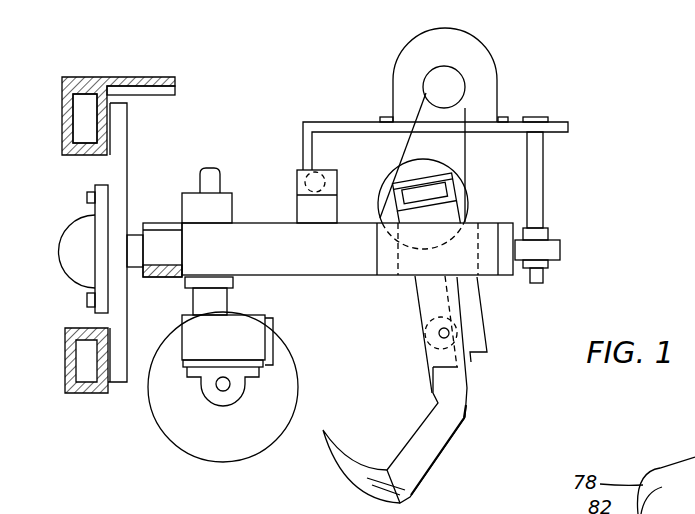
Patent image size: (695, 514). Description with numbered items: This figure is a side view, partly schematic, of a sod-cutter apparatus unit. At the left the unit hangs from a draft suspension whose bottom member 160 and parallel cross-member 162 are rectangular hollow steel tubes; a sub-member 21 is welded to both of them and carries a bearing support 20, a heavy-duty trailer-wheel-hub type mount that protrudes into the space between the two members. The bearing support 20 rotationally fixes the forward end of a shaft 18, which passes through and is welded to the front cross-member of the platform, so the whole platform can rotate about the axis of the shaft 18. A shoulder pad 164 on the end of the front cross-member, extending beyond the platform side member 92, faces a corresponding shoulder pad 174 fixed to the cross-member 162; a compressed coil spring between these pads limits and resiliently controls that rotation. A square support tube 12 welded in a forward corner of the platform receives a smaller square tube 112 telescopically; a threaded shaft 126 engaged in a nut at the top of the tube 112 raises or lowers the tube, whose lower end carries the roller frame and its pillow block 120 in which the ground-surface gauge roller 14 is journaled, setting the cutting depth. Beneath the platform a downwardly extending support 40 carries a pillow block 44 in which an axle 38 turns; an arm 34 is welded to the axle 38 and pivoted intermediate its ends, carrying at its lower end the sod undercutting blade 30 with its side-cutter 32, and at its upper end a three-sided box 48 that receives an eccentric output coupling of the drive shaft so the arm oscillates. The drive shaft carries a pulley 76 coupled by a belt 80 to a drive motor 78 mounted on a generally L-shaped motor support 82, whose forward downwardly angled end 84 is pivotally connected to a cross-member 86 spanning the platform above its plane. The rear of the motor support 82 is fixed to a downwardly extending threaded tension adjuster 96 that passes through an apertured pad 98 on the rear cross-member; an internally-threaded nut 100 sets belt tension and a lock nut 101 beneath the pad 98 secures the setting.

The shoulder pad 174 is at (147, 77).
The cross-member 162 is at (82, 138).
The sub-member 21 is at (126, 157).
The bottom member 160 is at (86, 395).
The bearing support 20 is at (73, 273).
The shaft 18 is at (135, 233).
The shoulder pad 164 is at (166, 278).
The side member 92 is at (336, 256).
The square support tube 12 is at (232, 211).
The threaded shaft 126 is at (220, 180).
The cross-member 86 is at (327, 173).
The forward downwardly angled end 84 is at (303, 155).
The motor support 82 is at (363, 122).
The drive motor 78 is at (478, 62).
The belt 80 is at (466, 165).
The pulley 76 is at (381, 211).
The three-sided box 48 is at (448, 210).
The threaded tension adjuster 96 is at (541, 203).
The internally-threaded nut 100 is at (548, 233).
The apertured pad 98 is at (562, 250).
The lock nut 101 is at (552, 265).
The arm 34 is at (418, 297).
The support 40 is at (476, 323).
The pillow block 44 is at (430, 353).
The axle 38 is at (450, 335).
The sod undercutting blade 30 is at (393, 484).
The side-cutter 32 is at (343, 471).
The smaller square tube 112 is at (228, 306).
The pillow block 120 is at (207, 399).
The ground-surface gauge roller 14 is at (218, 453).